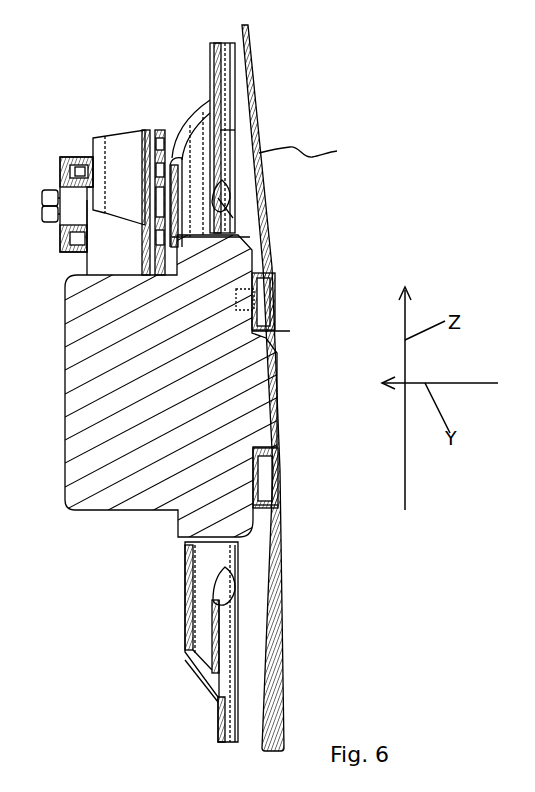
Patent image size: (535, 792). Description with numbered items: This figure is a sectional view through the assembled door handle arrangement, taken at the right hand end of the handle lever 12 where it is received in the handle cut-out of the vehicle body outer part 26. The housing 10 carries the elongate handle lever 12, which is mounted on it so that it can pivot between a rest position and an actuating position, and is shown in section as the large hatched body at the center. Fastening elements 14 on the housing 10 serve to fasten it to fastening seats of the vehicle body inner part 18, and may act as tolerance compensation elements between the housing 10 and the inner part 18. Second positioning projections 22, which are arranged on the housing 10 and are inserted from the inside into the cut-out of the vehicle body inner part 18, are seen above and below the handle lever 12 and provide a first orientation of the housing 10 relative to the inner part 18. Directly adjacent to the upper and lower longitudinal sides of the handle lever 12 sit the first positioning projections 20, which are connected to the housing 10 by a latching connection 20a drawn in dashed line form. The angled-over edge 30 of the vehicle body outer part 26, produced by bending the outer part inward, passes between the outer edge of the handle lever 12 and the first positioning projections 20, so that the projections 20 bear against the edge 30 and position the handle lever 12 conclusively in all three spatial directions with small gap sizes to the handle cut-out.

The housing 10 is at (208, 407).
The handle lever 12 is at (277, 382).
The fastening element 14 is at (57, 187).
The vehicle body inner part 18 is at (232, 112).
The first positioning projection 20 is at (277, 293).
The latching connection 20a is at (246, 295).
The second positioning projection 22 is at (203, 170).
The vehicle body outer part 26 is at (311, 150).
The angled-over edge 30 is at (277, 333).